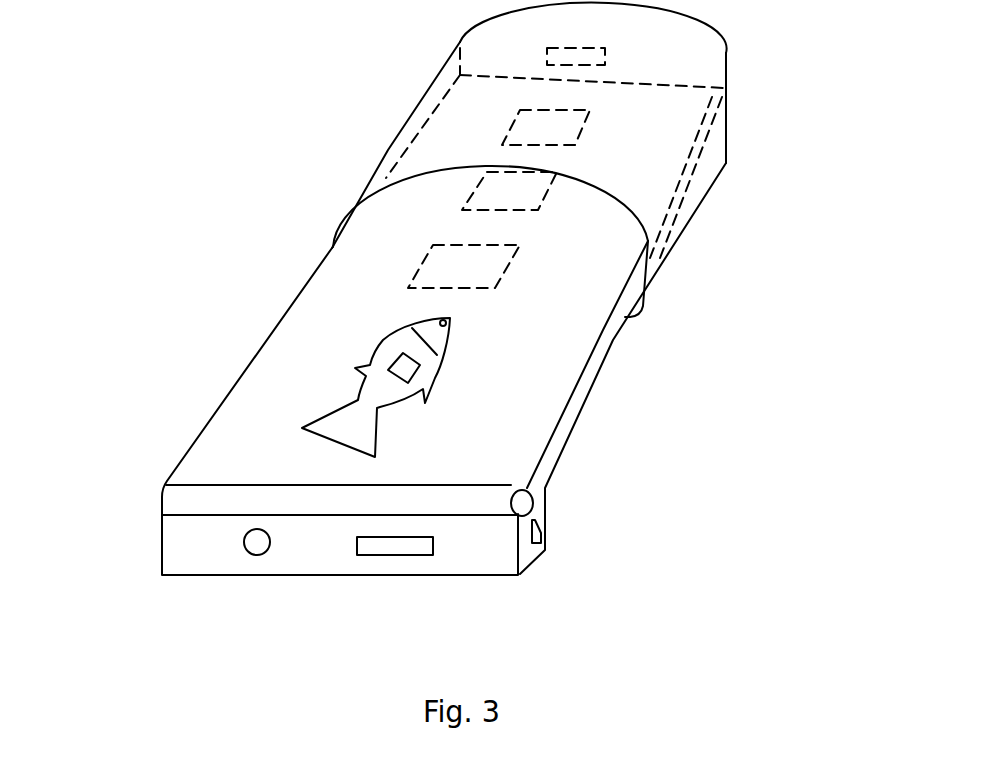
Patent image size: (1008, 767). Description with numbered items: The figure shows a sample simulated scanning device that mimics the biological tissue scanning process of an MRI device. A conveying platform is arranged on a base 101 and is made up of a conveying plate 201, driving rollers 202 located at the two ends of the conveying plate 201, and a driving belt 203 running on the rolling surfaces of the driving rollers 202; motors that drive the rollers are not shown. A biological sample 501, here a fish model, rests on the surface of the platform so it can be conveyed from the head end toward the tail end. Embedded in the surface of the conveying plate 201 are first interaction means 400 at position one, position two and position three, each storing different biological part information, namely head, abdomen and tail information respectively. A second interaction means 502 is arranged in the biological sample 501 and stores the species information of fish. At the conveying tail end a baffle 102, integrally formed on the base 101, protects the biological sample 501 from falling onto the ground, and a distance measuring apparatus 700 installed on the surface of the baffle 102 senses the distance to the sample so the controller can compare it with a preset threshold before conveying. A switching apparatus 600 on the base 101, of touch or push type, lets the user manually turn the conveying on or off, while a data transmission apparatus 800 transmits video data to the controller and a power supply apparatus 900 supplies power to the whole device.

The base 101 is at (528, 555).
The baffle 102 is at (700, 70).
The conveying plate 201 is at (545, 465).
The driving rollers 202 is at (522, 503).
The driving belt 203 is at (560, 413).
The first interaction means 400 is at (427, 283).
The biological sample 501 is at (347, 428).
The second interaction means 502 is at (407, 370).
The switching apparatus 600 is at (540, 534).
The distance measuring apparatus 700 is at (560, 57).
The data transmission apparatus 800 is at (413, 547).
The power supply apparatus 900 is at (258, 542).